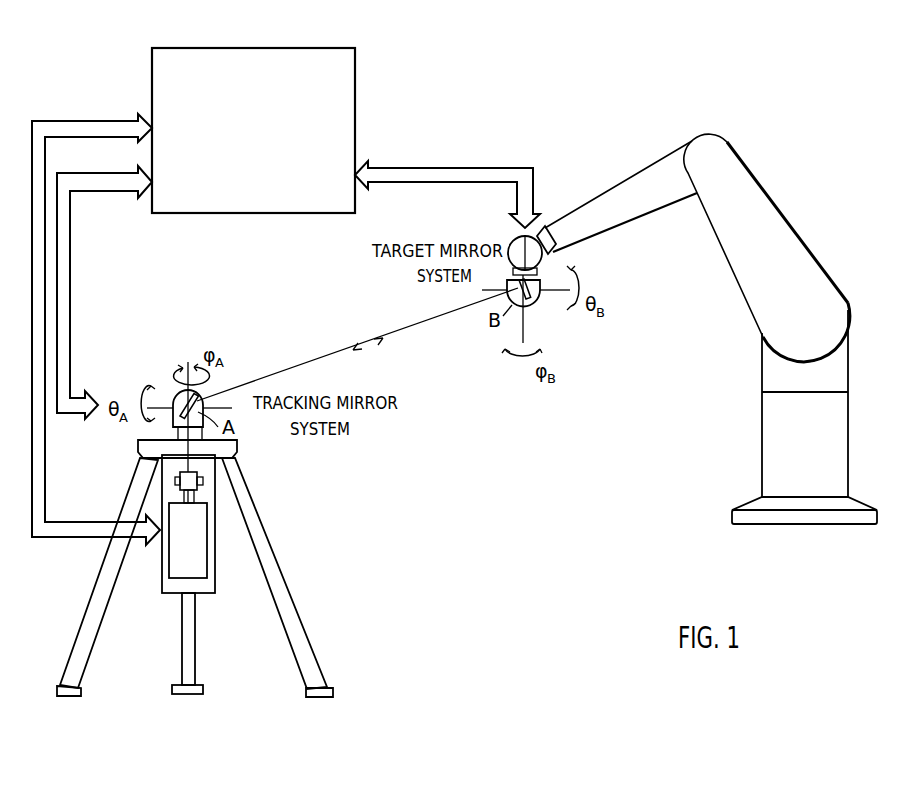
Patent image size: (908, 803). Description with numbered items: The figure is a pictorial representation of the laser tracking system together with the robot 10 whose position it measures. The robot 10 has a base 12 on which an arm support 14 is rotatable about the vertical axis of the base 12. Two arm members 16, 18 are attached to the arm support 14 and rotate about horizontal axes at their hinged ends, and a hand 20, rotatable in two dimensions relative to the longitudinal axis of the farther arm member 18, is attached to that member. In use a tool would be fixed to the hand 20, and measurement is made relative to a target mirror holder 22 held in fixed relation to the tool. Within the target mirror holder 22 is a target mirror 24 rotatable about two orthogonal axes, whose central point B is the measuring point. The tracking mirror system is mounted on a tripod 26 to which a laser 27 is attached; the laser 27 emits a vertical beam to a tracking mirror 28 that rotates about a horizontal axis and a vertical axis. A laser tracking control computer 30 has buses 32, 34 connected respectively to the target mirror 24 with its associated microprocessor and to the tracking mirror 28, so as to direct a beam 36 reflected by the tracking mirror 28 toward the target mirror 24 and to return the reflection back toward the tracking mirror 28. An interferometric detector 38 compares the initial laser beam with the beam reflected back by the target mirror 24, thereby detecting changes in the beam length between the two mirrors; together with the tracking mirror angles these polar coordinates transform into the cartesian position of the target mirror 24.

The robot 10 is at (672, 445).
The base 12 is at (842, 448).
The arm support 14 is at (833, 375).
The arm member 16 is at (785, 210).
The farther arm member 18 is at (635, 173).
The hand 20 is at (513, 237).
The target mirror holder 22 is at (537, 302).
The target mirror 24 is at (540, 273).
The tripod 26 is at (302, 620).
The laser 27 is at (197, 555).
The tracking mirror 28 is at (176, 392).
The laser tracking control computer 30 is at (318, 47).
The bus 32 is at (430, 166).
The bus 34 is at (120, 190).
The beam 36 is at (378, 331).
The interferometric detector 38 is at (210, 483).